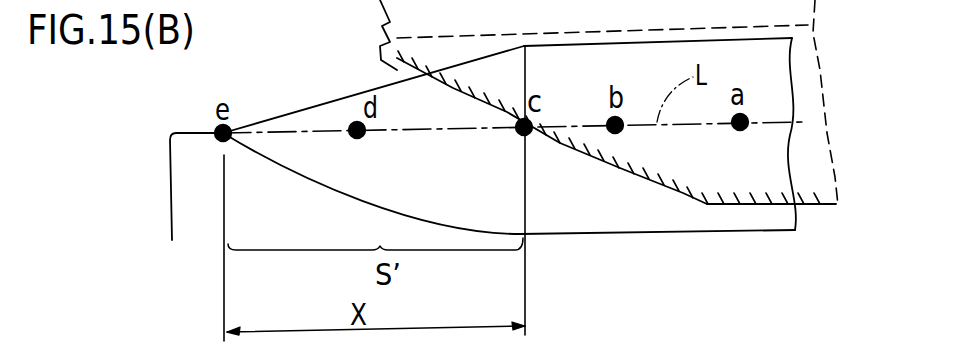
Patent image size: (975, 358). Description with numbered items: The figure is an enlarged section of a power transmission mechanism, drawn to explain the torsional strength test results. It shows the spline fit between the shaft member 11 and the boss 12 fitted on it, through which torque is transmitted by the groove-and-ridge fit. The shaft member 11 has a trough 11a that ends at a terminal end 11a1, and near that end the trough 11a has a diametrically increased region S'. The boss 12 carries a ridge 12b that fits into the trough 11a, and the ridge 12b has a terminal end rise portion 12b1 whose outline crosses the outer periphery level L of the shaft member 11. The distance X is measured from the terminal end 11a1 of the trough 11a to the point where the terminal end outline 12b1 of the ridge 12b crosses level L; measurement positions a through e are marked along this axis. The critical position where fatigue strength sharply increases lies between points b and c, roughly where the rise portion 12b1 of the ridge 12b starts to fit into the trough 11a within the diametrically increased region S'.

The shaft member 11 is at (171, 192).
The trough 11a is at (617, 233).
The terminal end 11a1 is at (228, 125).
The boss 12 is at (378, 30).
The ridge 12b is at (738, 207).
The terminal end rise portion 12b1 is at (578, 150).